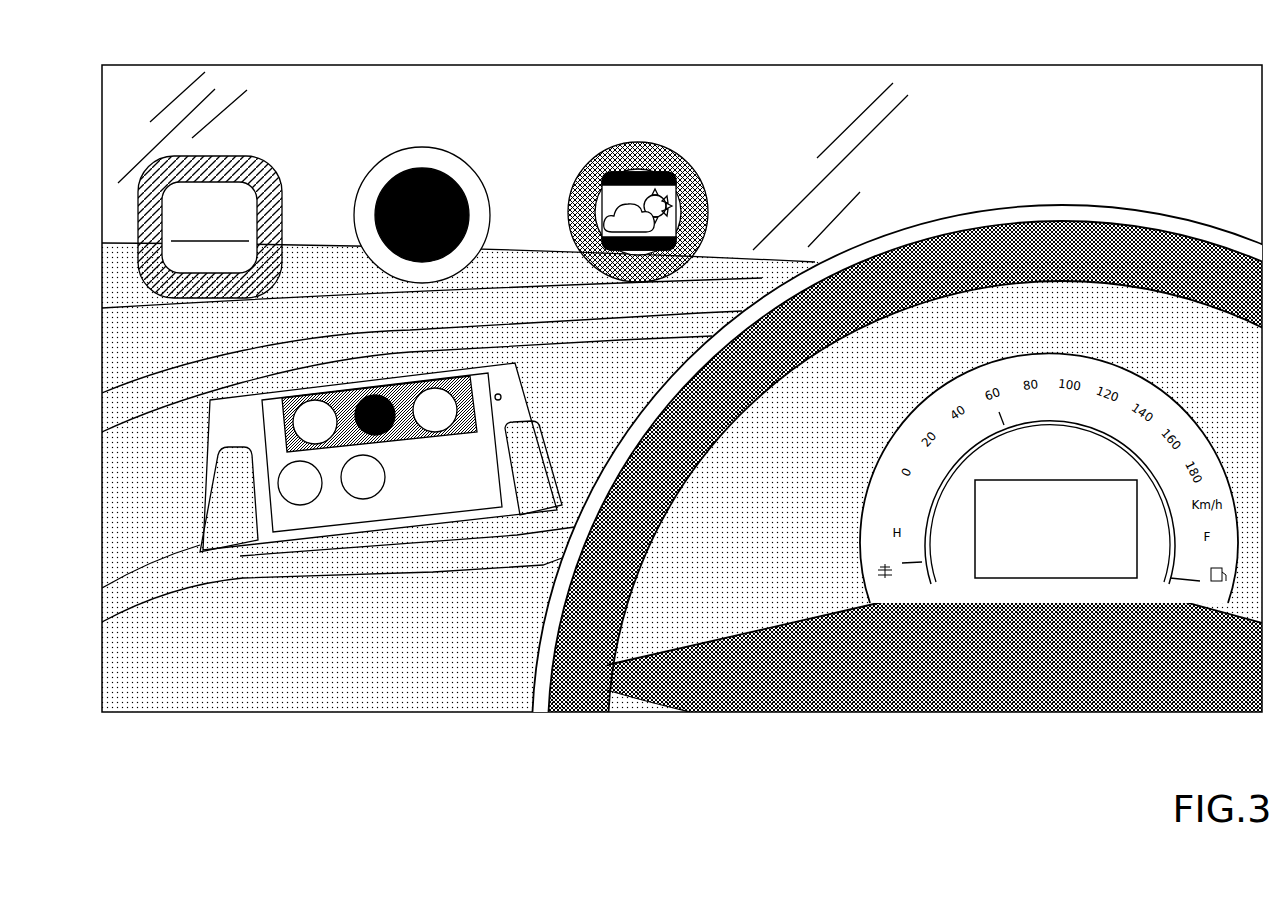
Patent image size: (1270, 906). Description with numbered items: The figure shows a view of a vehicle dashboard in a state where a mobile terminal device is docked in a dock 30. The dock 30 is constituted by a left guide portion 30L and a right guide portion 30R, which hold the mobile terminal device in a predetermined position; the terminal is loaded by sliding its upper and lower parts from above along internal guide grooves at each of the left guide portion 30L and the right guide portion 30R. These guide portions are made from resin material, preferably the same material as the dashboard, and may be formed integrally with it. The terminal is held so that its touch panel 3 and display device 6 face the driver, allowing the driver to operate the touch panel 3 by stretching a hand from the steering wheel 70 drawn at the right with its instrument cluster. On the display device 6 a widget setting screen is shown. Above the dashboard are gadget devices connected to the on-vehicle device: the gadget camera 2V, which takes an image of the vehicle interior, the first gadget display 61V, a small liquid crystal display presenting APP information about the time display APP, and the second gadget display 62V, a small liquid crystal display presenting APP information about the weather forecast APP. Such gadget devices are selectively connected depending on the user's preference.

The first gadget display 61V is at (212, 157).
The gadget camera 2V is at (422, 160).
The second gadget display 62V is at (638, 150).
The touch panel 3 is at (380, 327).
The display device 6 is at (270, 400).
The steering wheel 70 is at (951, 216).
The left guide portion 30L is at (240, 557).
The right guide portion 30R is at (513, 570).
The dock 30 is at (381, 629).